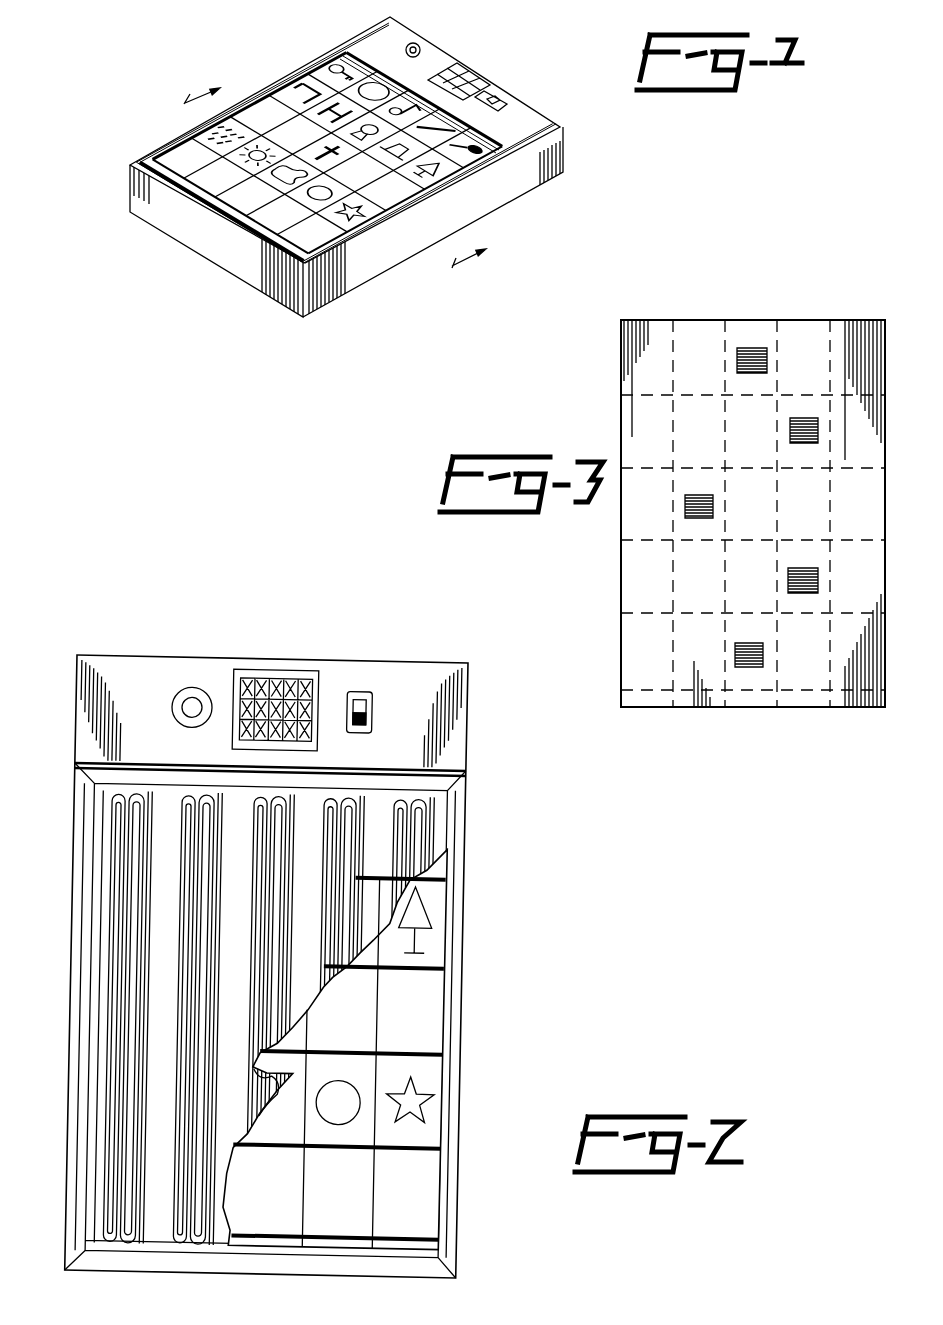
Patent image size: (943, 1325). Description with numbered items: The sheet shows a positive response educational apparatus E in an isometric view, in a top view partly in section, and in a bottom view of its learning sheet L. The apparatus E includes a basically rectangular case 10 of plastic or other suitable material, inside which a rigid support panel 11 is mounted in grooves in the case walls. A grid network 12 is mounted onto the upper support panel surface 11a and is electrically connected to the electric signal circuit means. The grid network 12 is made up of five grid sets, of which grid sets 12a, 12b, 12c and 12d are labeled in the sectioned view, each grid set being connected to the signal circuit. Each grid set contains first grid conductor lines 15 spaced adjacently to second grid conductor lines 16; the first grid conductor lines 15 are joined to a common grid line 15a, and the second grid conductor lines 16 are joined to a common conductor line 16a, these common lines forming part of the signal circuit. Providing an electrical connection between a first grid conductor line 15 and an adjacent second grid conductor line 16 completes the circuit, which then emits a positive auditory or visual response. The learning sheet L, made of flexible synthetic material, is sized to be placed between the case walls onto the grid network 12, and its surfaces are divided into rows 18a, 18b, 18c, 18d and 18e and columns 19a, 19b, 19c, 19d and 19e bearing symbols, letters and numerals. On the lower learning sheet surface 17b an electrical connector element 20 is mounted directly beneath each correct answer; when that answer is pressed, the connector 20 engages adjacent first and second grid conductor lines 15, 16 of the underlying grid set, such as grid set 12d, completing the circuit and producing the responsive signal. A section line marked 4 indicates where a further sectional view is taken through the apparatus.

In FIG. 1, the case 10 is at (548, 168).
In FIG. 2, the case 10 is at (470, 793).
In FIG. 2, the support panel 11 is at (110, 803).
In FIG. 2, the upper support panel surface 11a is at (229, 853).
In FIG. 2, the grid network 12 is at (358, 844).
In FIG. 2, the grid set 12a is at (141, 1026).
In FIG. 2, the grid set 12b is at (198, 926).
In FIG. 2, the grid set 12c is at (264, 913).
In FIG. 2, the grid set 12d is at (332, 886).
In FIG. 2, the first grid conductor lines 15 is at (112, 1103).
In FIG. 2, the common grid line 15a is at (232, 1246).
In FIG. 2, the second grid conductor lines 16 is at (151, 985).
In FIG. 2, the common conductor line 16a is at (177, 797).
In FIG. 3, the lower learning sheet surface 17b is at (792, 700).
In FIG. 1, the row 18a is at (352, 56).
In FIG. 3, the row 18a is at (622, 357).
In FIG. 1, the row 18b is at (300, 79).
In FIG. 3, the row 18b is at (622, 418).
In FIG. 2, the row 18b is at (442, 928).
In FIG. 1, the row 18c is at (267, 106).
In FIG. 3, the row 18c is at (622, 500).
In FIG. 2, the row 18c is at (442, 980).
In FIG. 1, the row 18d is at (212, 130).
In FIG. 3, the row 18d is at (622, 582).
In FIG. 2, the row 18d is at (440, 1106).
In FIG. 1, the row 18e is at (172, 151).
In FIG. 3, the row 18e is at (622, 642).
In FIG. 2, the row 18e is at (440, 1177).
In FIG. 1, the column 19a is at (163, 186).
In FIG. 3, the column 19a is at (866, 330).
In FIG. 1, the column 19b is at (190, 203).
In FIG. 3, the column 19b is at (804, 325).
In FIG. 1, the column 19c is at (216, 218).
In FIG. 3, the column 19c is at (752, 330).
In FIG. 2, the column 19c is at (302, 1226).
In FIG. 1, the column 19d is at (244, 232).
In FIG. 3, the column 19d is at (702, 329).
In FIG. 2, the column 19d is at (360, 1227).
In FIG. 1, the column 19e is at (270, 252).
In FIG. 3, the column 19e is at (650, 327).
In FIG. 2, the column 19e is at (428, 1227).
In FIG. 3, the electrical connector element 20 is at (768, 370).
In FIG. 1, the section line 4 is at (342, 173).
In FIG. 1, the educational apparatus E is at (487, 59).
In FIG. 2, the educational apparatus E is at (264, 633).
In FIG. 1, the learning sheet L is at (322, 262).
In FIG. 3, the learning sheet L is at (622, 556).
In FIG. 2, the learning sheet L is at (442, 1022).